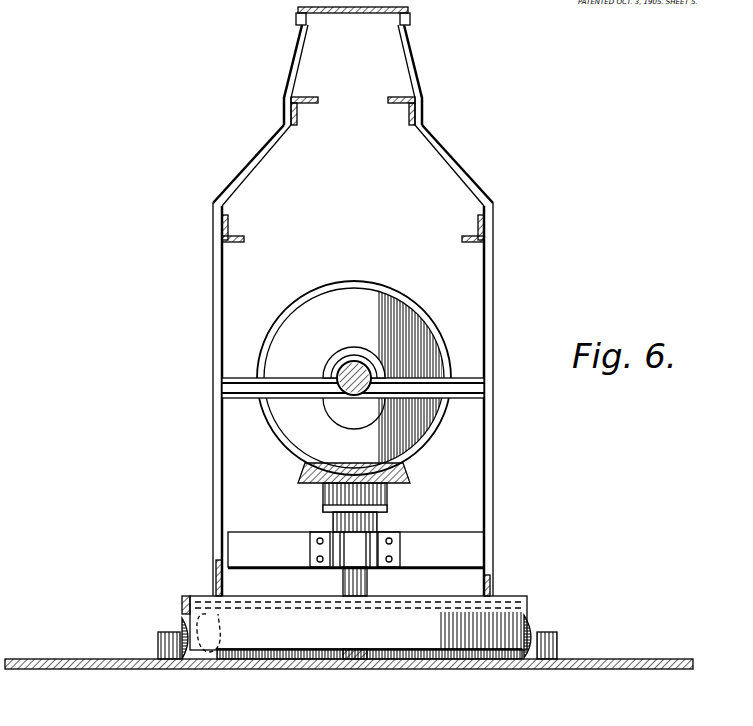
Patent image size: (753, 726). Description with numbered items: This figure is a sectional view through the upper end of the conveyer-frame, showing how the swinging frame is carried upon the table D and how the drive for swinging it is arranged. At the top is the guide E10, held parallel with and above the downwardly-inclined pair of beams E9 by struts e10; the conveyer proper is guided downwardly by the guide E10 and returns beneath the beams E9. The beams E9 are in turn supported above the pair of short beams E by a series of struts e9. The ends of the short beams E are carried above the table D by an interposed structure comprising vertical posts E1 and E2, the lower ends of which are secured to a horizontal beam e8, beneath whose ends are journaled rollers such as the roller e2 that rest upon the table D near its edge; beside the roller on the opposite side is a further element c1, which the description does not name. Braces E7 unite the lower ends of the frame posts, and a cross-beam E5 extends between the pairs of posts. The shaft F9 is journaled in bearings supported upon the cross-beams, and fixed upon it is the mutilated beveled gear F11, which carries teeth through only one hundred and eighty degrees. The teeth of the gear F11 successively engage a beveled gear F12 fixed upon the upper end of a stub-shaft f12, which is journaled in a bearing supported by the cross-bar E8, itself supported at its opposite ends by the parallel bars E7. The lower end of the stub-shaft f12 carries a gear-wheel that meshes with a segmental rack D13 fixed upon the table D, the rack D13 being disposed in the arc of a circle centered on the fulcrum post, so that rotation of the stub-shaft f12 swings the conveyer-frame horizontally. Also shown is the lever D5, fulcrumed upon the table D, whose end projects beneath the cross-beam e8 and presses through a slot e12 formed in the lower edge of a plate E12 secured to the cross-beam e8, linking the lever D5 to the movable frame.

The guide E10 is at (358, 14).
The struts e10 is at (300, 49).
The pair of beams E9 is at (307, 101).
The struts e9 is at (277, 147).
The vertical post E2 is at (216, 294).
The vertical post E1 is at (493, 323).
The short beams E is at (237, 232).
The mutilated beveled gear F11 is at (363, 283).
The cross-beam E5 is at (322, 401).
The shaft F9 is at (340, 362).
The beveled gear F12 is at (432, 475).
The cross-bar E8 is at (458, 522).
The braces E7 is at (227, 542).
The stub-shaft f12 is at (352, 578).
The plate E12 is at (358, 624).
The horizontal beam e8 is at (180, 603).
The roller e2 is at (180, 623).
The lever D5 is at (372, 645).
The clamp lobe (c') c1 is at (533, 627).
The segmental rack D13 is at (558, 640).
The table D is at (655, 670).
The slot e12 is at (283, 669).